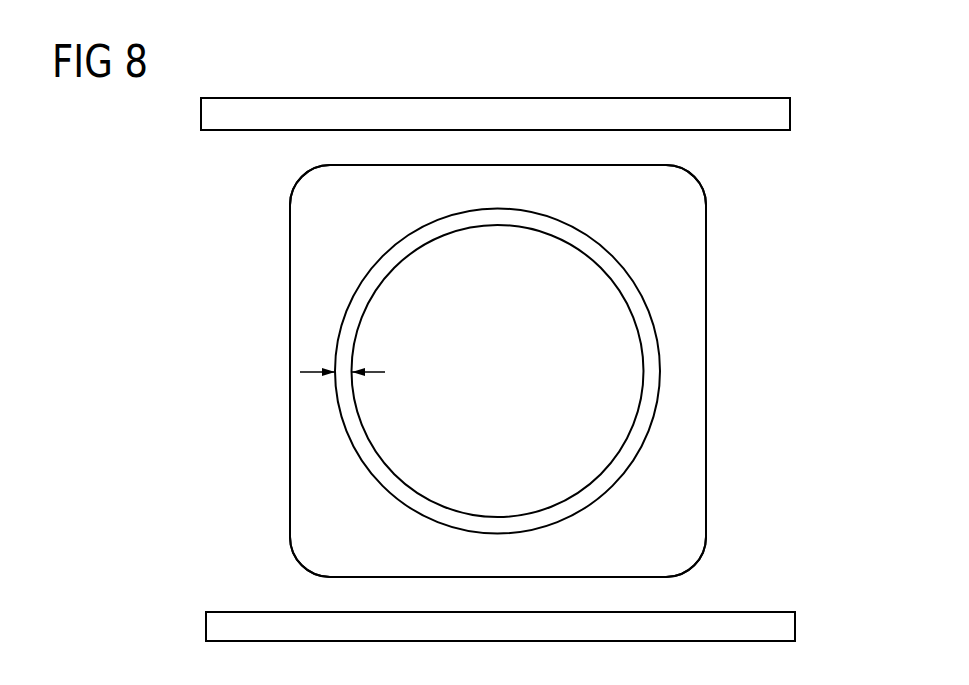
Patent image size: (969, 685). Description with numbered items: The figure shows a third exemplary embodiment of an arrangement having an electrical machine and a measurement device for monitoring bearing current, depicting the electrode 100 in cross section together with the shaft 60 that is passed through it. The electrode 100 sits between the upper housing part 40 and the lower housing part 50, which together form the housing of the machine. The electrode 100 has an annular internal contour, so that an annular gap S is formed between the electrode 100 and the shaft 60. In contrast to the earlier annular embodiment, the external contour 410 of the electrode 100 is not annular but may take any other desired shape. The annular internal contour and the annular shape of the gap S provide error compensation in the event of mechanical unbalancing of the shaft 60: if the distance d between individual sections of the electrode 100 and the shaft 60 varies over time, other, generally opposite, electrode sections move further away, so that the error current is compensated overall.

The upper housing part 40 is at (778, 116).
The lower housing part 50 is at (782, 628).
The electrode 100 is at (695, 498).
The external contour 410 is at (706, 257).
The shaft 60 is at (425, 425).
The annular gap S is at (350, 408).
The distance d is at (342, 355).